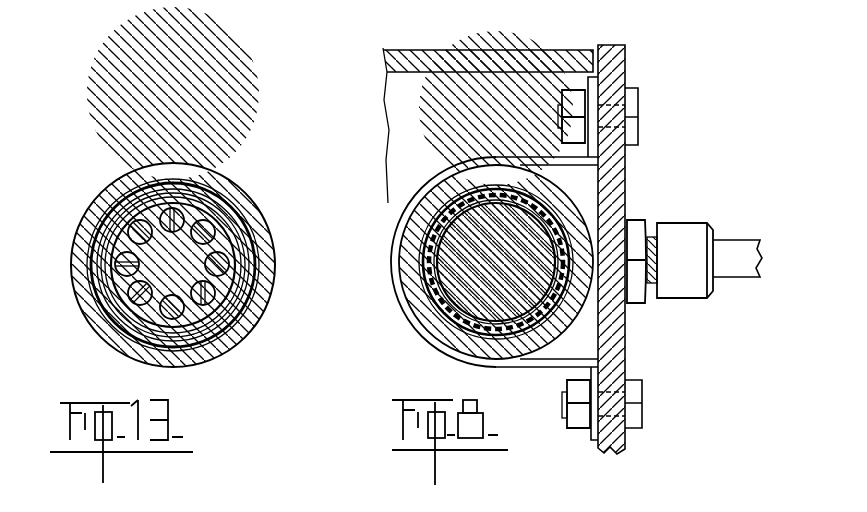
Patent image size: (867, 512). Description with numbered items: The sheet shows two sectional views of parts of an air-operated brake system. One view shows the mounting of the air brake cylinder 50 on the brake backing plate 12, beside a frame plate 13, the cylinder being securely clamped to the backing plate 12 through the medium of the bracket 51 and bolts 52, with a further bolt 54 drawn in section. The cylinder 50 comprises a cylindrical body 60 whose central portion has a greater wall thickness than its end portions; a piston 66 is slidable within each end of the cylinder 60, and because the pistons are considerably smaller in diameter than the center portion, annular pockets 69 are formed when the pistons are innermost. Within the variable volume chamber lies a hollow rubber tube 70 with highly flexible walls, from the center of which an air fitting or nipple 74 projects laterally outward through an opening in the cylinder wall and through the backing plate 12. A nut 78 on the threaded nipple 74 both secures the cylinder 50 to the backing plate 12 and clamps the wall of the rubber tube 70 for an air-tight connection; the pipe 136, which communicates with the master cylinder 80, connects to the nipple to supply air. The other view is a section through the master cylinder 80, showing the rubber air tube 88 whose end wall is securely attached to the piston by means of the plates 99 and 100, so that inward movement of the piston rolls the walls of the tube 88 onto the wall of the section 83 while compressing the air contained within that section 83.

In FIG. 8, the backing plate 12 is at (613, 58).
In FIG. 8, the frame plate 13 is at (493, 62).
In FIG. 8, the air brake cylinder 50 is at (398, 258).
In FIG. 8, the bracket 51 is at (400, 297).
In FIG. 8, the bolts 52 is at (633, 416).
In FIG. 8, the bolt 54 is at (562, 117).
In FIG. 8, the cylindrical body 60 is at (460, 337).
In FIG. 8, the piston 66 is at (505, 290).
In FIG. 8, the annular pockets 69 is at (427, 223).
In FIG. 8, the hollow rubber tube 70 is at (447, 300).
In FIG. 8, the air fitting or nipple 74 is at (650, 283).
In FIG. 8, the nut 78 is at (633, 228).
In FIG. 8, the pipe 136 is at (737, 260).
In FIG. 13, the master cylinder 80 is at (168, 162).
In FIG. 13, the section 83 is at (208, 182).
In FIG. 13, the rubber air tube 88 is at (227, 220).
In FIG. 13, the plate 99 is at (220, 242).
In FIG. 13, the plate 100 is at (196, 238).